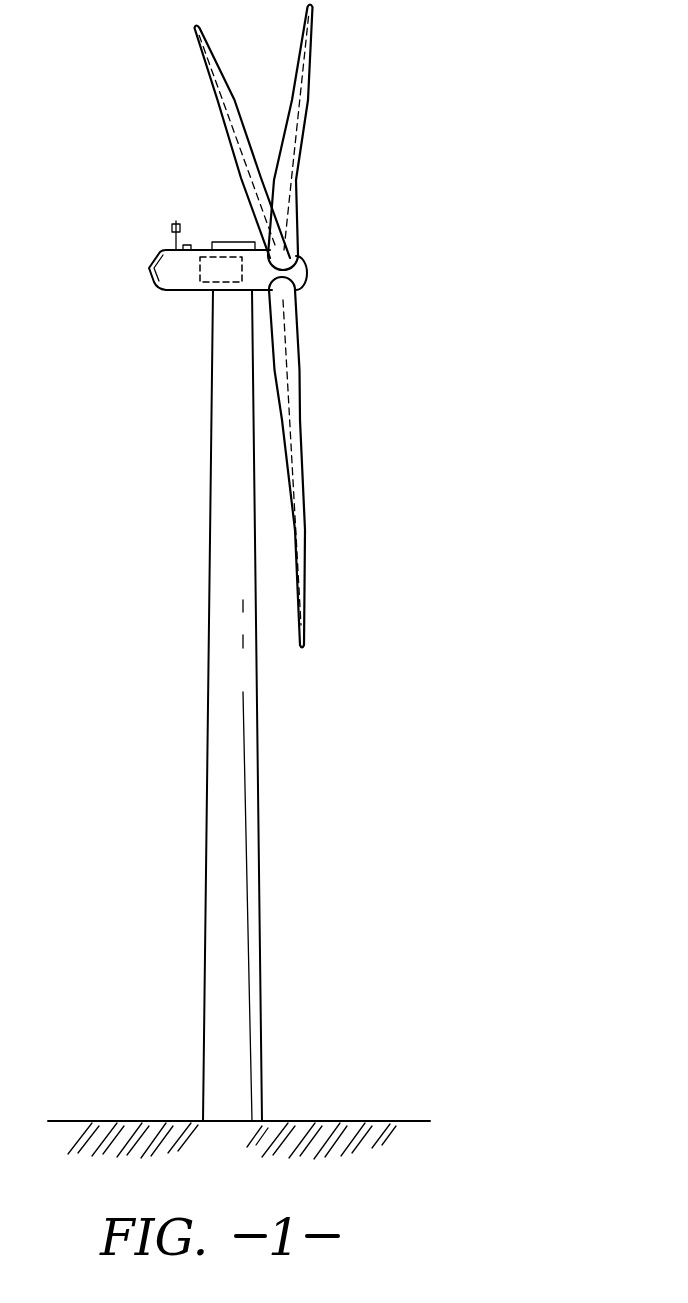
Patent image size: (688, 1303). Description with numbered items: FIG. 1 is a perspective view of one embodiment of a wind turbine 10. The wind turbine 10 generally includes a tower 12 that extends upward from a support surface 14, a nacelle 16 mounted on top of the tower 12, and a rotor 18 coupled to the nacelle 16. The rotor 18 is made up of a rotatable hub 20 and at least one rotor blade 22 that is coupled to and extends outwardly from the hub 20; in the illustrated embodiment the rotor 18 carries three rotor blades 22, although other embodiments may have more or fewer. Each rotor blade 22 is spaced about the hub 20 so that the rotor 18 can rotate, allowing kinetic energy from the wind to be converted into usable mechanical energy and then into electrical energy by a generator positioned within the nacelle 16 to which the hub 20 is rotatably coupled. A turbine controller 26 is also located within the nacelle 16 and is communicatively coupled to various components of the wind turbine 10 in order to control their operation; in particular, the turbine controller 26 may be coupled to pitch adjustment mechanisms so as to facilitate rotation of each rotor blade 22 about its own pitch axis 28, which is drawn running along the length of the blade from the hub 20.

The wind turbine 10 is at (437, 74).
The tower 12 is at (217, 821).
The support surface 14 is at (130, 1120).
The nacelle 16 is at (188, 293).
The rotor 18 is at (283, 326).
The hub 20 is at (300, 262).
The rotor blade 22 is at (224, 71).
The turbine controller 26 is at (220, 257).
The pitch axis 28 is at (233, 148).